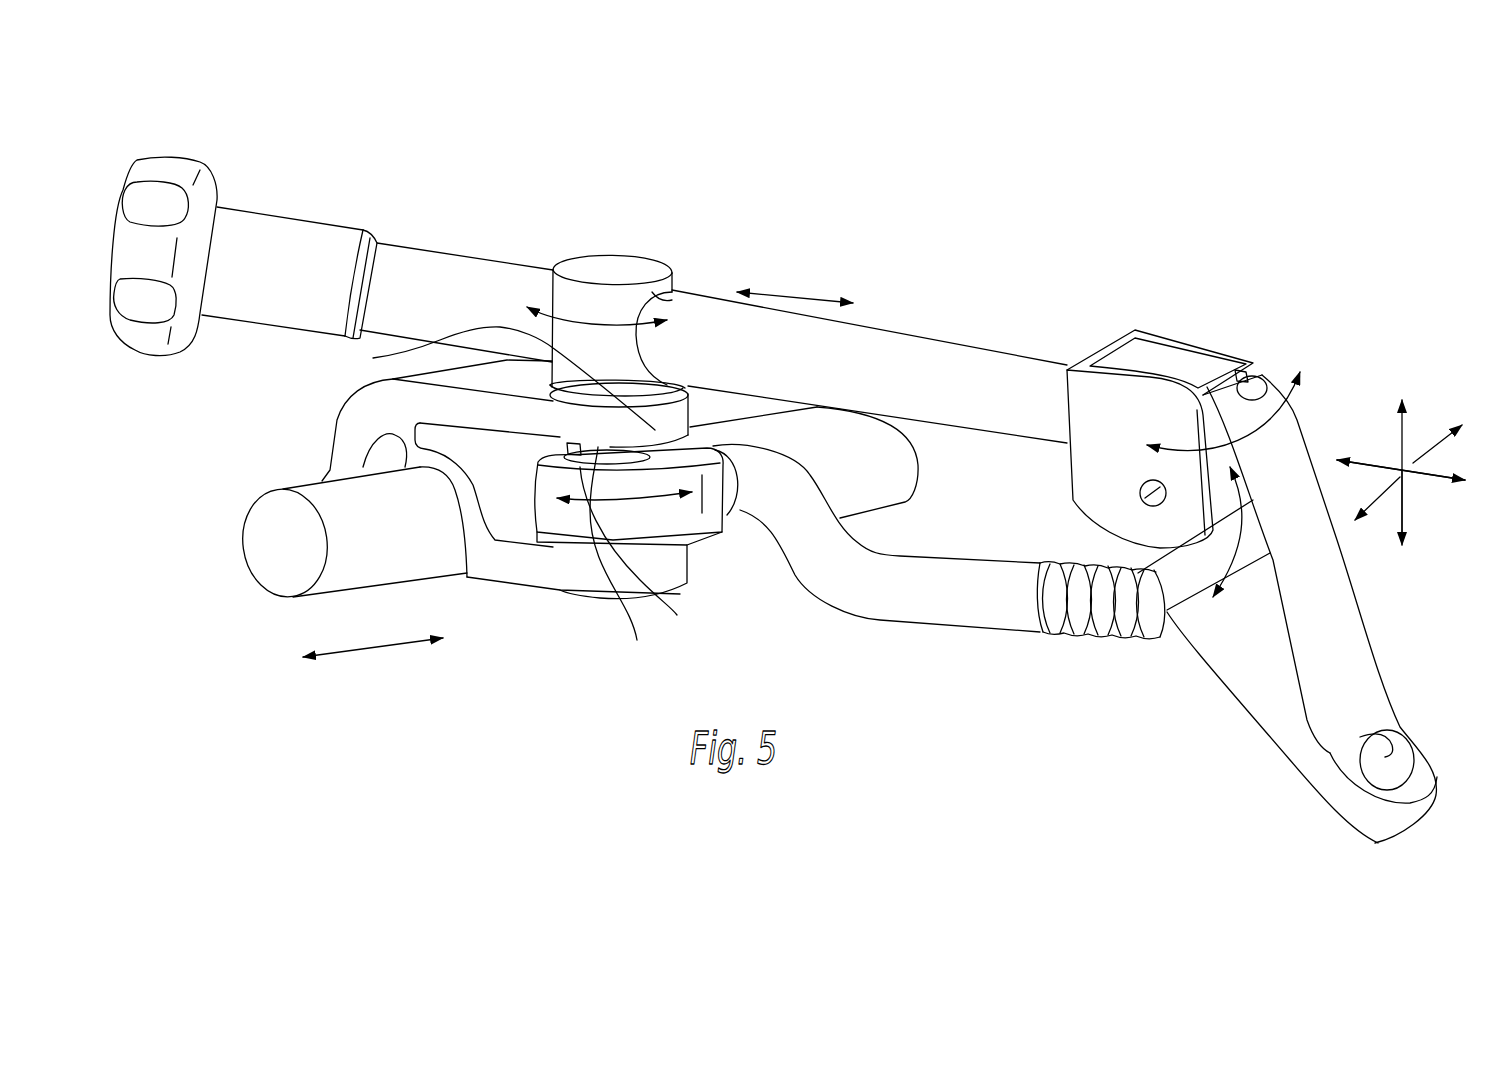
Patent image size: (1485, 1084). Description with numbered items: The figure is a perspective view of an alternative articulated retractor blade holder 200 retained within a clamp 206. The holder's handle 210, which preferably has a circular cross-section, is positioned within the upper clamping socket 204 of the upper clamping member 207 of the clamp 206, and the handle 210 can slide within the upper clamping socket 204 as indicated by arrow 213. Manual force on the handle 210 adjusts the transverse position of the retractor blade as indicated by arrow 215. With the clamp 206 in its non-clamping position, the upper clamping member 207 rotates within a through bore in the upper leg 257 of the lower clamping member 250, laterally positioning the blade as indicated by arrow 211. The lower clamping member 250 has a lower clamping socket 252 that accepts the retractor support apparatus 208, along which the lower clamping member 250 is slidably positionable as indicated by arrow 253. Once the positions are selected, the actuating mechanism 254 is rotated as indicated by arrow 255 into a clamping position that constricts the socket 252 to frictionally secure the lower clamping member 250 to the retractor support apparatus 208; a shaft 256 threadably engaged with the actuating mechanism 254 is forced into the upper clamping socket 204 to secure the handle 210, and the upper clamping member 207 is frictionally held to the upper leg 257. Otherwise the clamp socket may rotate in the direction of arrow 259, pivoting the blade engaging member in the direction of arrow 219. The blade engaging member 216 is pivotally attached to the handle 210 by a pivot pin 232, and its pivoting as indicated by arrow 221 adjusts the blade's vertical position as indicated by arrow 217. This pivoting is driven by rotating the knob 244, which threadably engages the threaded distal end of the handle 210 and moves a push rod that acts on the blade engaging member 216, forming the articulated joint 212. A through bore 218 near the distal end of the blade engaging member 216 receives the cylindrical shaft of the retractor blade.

The articulated retractor blade holder 200 is at (897, 326).
The upper clamping socket 204 is at (672, 302).
The clamp 206 is at (336, 404).
The upper clamping member 207 is at (610, 272).
The retractor support apparatus 208 is at (370, 567).
The handle 210 is at (453, 278).
The arrow 211 is at (1433, 443).
The articulated joint 212 is at (1128, 328).
The arrow 213 is at (800, 292).
The arrow 215 is at (1393, 432).
The blade engaging member 216 is at (1248, 658).
The arrow 217 is at (1407, 525).
The through bore 218 is at (1360, 737).
The arrow 219 is at (1272, 440).
The arrow 221 is at (1240, 550).
The pivot pin 232 is at (1140, 493).
The knob 244 is at (331, 250).
The lower clamping member 250 is at (482, 590).
The lower clamping socket 252 is at (466, 545).
The arrow 253 is at (390, 650).
The actuating mechanism 254 is at (680, 513).
The arrow 255 is at (637, 640).
The shaft 256 is at (647, 515).
The upper leg 257 is at (373, 358).
The arrow 259 is at (617, 330).